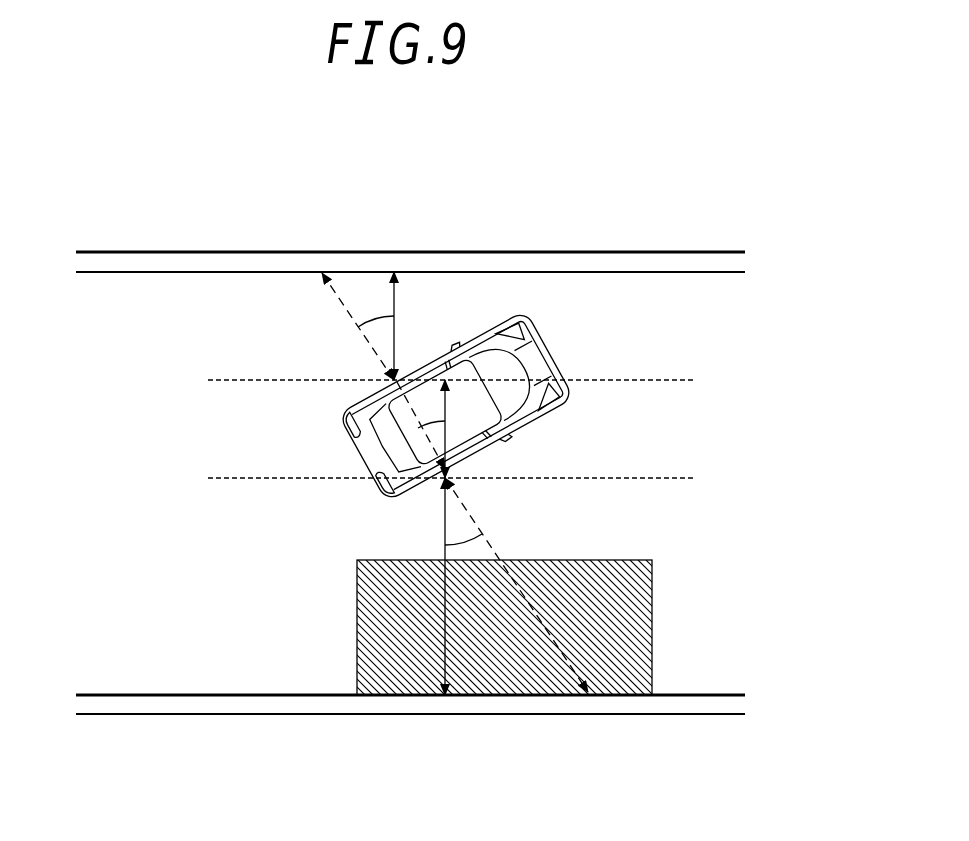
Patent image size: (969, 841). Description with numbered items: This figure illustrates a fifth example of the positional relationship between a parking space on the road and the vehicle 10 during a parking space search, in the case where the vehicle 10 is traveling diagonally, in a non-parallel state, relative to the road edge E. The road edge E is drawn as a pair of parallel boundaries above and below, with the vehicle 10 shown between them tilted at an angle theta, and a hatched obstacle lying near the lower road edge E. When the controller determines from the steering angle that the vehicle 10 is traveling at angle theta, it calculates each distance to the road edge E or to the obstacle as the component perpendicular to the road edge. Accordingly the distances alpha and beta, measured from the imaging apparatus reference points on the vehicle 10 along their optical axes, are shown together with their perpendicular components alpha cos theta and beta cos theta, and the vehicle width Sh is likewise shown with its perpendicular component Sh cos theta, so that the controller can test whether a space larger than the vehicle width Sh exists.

The vehicle 10 is at (357, 416).
The road edge E is at (248, 262).
The vehicle width Sh is at (518, 439).